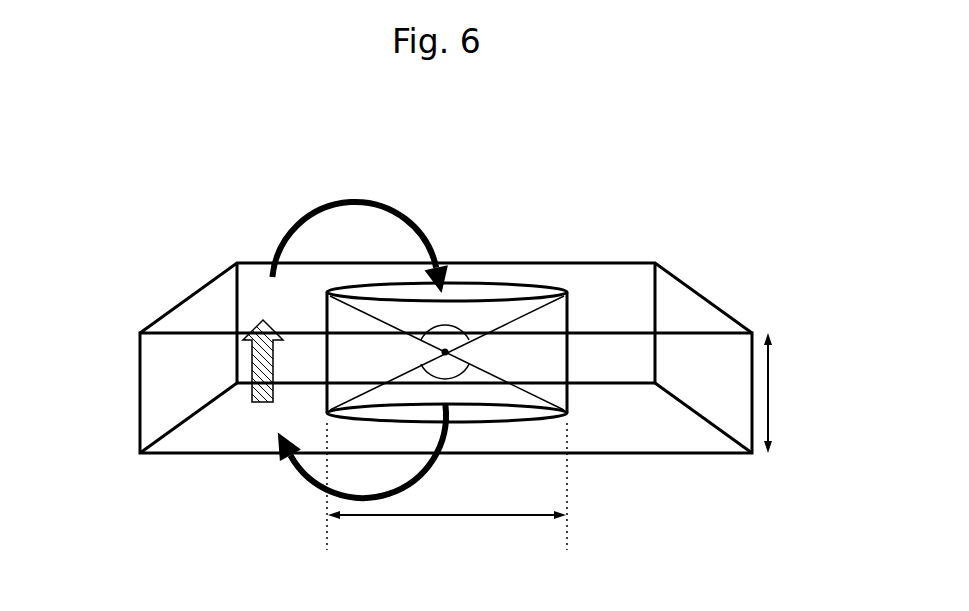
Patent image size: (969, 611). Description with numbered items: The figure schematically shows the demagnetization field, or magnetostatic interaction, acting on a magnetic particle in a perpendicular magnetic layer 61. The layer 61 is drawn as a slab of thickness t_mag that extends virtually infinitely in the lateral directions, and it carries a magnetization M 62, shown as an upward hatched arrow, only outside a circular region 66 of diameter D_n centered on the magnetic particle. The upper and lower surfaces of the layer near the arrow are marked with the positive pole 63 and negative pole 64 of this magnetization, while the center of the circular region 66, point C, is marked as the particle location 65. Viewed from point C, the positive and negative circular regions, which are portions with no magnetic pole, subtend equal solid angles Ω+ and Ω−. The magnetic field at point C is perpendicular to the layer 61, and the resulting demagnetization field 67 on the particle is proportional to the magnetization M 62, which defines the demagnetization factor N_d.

The perpendicular magnetic layer 61 is at (140, 404).
The magnetization M 62 is at (238, 365).
The positive magnetic pole (+M) 63 is at (253, 278).
The negative magnetic pole (-M) 64 is at (253, 432).
The center point C of cylinder 65 is at (445, 352).
The circular region 66 is at (567, 290).
The demagnetization field 67 is at (418, 237).